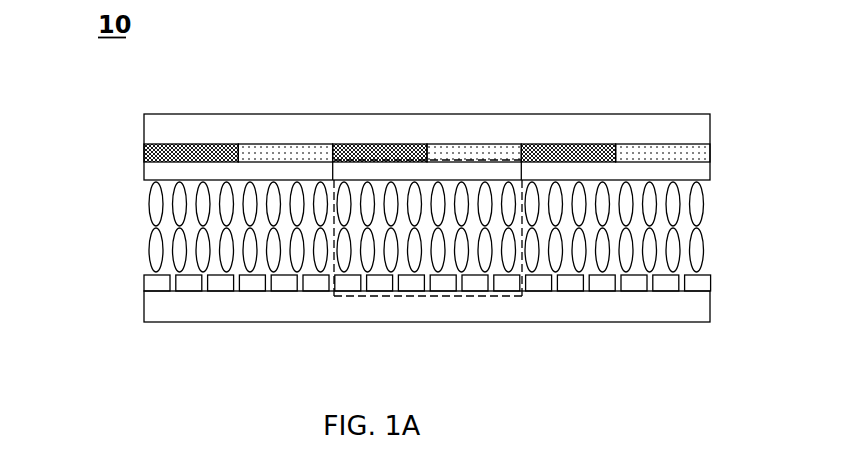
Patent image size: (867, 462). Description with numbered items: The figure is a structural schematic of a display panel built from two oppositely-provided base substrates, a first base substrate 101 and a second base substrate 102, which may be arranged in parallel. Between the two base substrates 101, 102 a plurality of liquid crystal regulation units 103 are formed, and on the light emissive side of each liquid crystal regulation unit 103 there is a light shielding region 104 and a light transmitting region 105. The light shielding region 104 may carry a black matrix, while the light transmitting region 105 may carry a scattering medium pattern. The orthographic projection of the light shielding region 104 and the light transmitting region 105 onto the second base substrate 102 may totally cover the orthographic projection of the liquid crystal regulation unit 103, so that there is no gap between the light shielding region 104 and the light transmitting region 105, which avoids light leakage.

The first base substrate 101 is at (144, 127).
The second base substrate 102 is at (144, 311).
The liquid crystal regulation unit 103 is at (438, 279).
The light shielding region 104 is at (396, 112).
The light transmitting region 105 is at (508, 113).